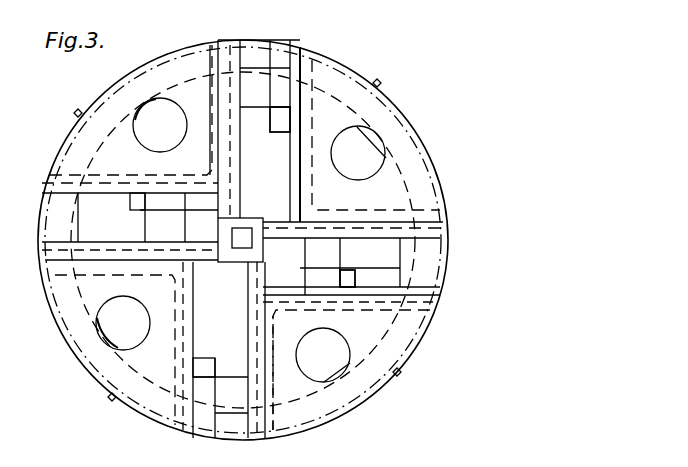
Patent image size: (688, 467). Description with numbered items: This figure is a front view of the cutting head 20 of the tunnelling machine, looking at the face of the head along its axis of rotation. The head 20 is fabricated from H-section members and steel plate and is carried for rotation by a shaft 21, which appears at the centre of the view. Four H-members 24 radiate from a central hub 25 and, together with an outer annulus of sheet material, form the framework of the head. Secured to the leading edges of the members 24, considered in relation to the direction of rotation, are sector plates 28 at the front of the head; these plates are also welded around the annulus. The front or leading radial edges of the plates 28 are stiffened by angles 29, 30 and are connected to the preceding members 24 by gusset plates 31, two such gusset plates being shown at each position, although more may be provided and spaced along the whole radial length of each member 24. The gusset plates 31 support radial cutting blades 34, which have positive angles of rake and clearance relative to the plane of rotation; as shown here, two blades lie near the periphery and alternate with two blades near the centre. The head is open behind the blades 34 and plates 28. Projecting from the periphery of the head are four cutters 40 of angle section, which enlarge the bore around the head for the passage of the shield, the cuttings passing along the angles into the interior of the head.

The cutting head 20 is at (425, 108).
The shaft 21 is at (244, 232).
The H-members 24 is at (283, 218).
The central hub 25 is at (261, 250).
The sector plates 28 is at (360, 86).
The angle 29 is at (274, 410).
The angle 30 is at (251, 288).
The gusset plates 31 is at (248, 66).
The radial cutting blades 34 is at (270, 120).
The cutters 40 is at (76, 113).